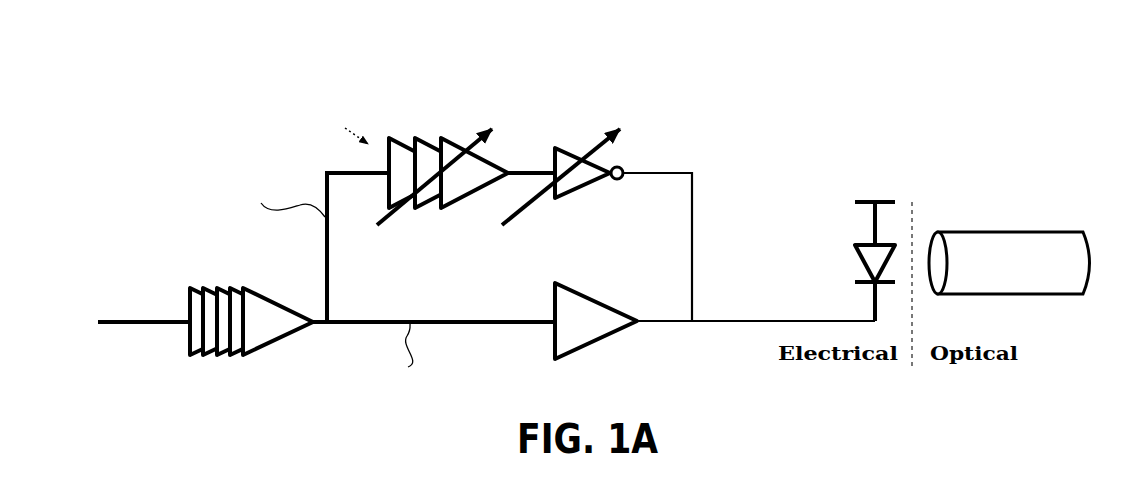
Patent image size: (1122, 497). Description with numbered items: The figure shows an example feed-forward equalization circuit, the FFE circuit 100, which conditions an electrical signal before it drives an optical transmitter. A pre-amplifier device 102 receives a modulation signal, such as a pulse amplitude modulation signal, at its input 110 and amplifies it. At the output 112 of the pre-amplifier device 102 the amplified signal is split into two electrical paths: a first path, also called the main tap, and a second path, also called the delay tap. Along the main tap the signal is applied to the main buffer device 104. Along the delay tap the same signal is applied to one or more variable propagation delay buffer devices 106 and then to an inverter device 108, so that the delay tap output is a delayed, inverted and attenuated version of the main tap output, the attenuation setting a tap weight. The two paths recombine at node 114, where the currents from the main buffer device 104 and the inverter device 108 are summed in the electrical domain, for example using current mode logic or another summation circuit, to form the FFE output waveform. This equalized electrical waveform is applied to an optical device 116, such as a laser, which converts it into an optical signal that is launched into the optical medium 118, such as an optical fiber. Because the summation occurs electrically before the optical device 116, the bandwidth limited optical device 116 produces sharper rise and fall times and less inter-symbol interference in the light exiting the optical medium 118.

The FFE circuit 100 is at (146, 140).
The pre-amplifier device 102 is at (272, 313).
The buffer device 104 is at (593, 324).
The variable propagation delay buffer devices 106 is at (438, 138).
The inverter device 108 is at (598, 157).
The input 110 is at (127, 321).
The output of the pre-amplifier devices 112 is at (313, 330).
The node 114 is at (687, 323).
The optical device 116 is at (865, 263).
The optical medium 118 is at (1022, 230).